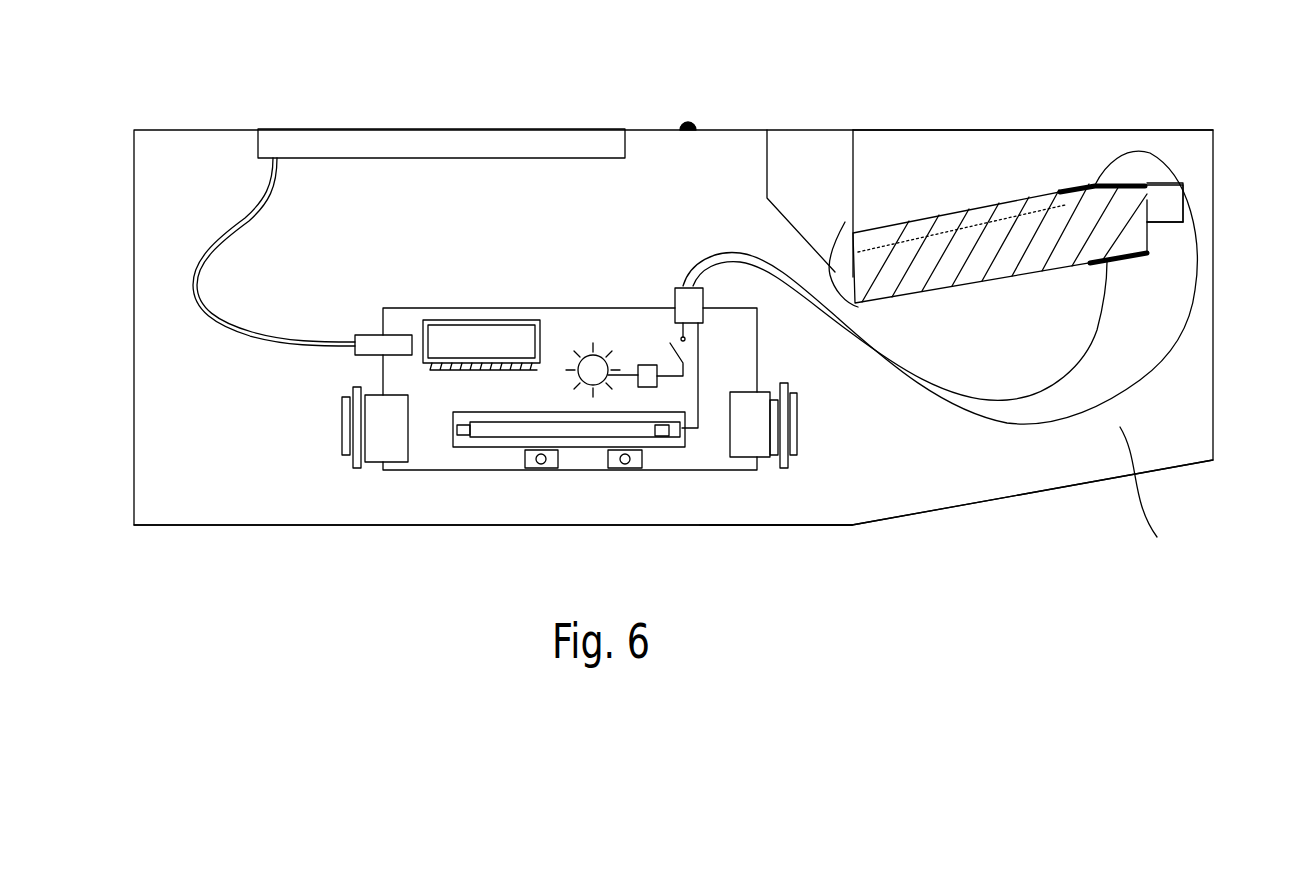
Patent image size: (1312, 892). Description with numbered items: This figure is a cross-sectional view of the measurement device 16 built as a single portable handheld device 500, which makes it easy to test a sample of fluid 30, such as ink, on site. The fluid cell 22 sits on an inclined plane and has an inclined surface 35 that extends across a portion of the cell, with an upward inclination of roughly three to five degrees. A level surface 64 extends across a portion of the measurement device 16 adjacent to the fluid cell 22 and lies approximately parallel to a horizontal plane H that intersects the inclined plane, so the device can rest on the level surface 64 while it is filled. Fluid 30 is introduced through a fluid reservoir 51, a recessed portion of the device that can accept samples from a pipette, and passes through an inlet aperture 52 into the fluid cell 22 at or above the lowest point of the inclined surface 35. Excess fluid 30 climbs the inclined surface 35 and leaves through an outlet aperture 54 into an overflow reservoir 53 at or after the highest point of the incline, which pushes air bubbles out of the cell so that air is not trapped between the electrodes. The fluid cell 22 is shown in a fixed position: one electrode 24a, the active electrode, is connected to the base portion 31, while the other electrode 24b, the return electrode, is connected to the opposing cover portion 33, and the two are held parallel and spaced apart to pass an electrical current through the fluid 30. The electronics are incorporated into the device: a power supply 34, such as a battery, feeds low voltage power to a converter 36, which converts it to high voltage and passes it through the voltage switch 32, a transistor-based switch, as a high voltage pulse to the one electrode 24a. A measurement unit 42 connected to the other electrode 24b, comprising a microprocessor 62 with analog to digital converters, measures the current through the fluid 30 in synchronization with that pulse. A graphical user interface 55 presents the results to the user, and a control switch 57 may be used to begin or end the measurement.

The handheld device 500 is at (170, 603).
The horizontal plane H is at (490, 510).
The measurement device 16 is at (1024, 114).
The fluid cell 22 is at (820, 262).
The one electrode 24a is at (1122, 262).
The other electrode 24b is at (1093, 192).
The fluid 30 is at (962, 215).
The base portion 31 is at (1078, 158).
The voltage switch 32 is at (683, 347).
The cover portion 33 is at (1045, 470).
The power supply 34 is at (585, 352).
The inclined surface 35 is at (1005, 265).
The converter 36 is at (645, 365).
The measurement unit 42 is at (483, 447).
The fluid reservoir 51 is at (812, 142).
The inlet aperture 52 is at (905, 228).
The overflow reservoir 53 is at (1180, 222).
The outlet aperture 54 is at (1148, 187).
The graphical user interface 55 is at (318, 140).
The control switch 57 is at (690, 125).
The microprocessor 62 is at (590, 430).
The level surface 64 is at (758, 527).